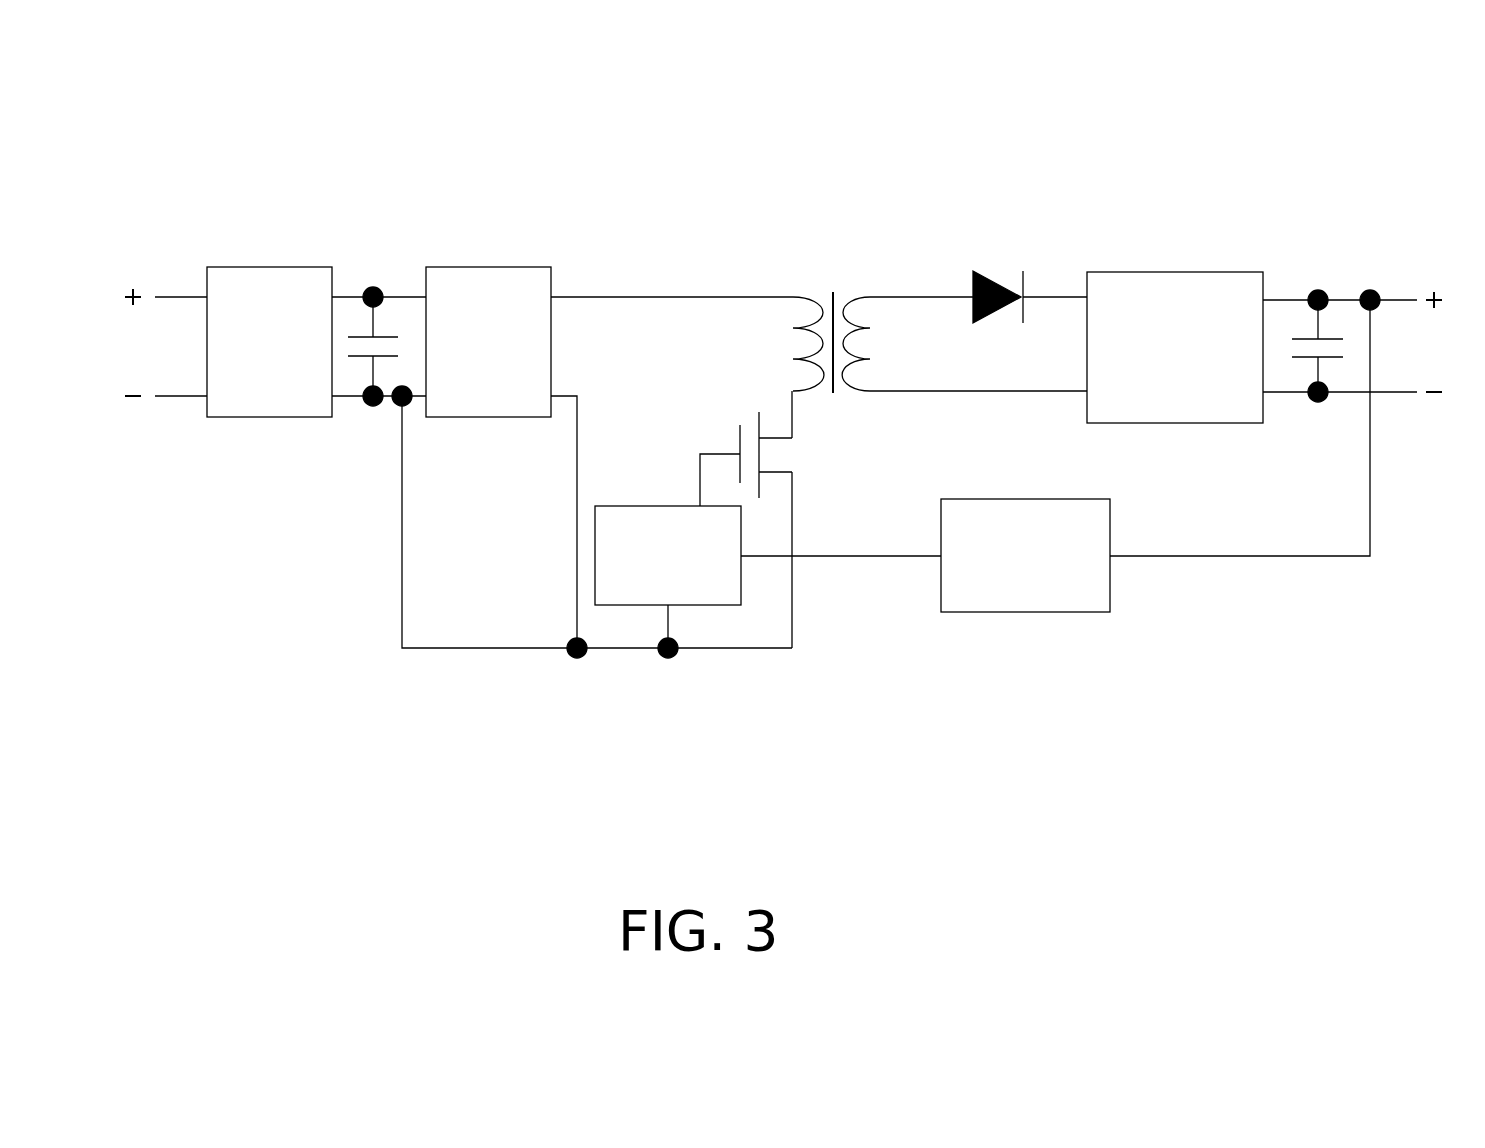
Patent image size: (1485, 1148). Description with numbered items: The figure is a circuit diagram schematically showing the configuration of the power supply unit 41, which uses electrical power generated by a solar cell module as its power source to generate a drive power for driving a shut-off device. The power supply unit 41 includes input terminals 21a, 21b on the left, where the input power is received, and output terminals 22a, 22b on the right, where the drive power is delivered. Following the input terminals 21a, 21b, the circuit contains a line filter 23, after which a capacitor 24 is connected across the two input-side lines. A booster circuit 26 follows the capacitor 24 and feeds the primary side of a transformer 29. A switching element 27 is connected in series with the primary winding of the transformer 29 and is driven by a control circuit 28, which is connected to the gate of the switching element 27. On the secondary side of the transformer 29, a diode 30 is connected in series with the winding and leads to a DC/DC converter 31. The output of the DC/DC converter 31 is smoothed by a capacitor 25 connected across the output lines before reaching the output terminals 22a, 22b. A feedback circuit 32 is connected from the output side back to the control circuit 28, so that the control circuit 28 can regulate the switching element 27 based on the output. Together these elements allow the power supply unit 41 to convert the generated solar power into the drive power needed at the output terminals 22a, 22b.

The input terminal 21a is at (177, 297).
The input terminal 21b is at (177, 396).
The output terminal 22a is at (1400, 300).
The output terminal 22b is at (1400, 393).
The line filter 23 is at (270, 267).
The capacitor 24 is at (390, 337).
The capacitor 25 is at (1333, 339).
The booster circuit 26 is at (507, 267).
The switching element 27 is at (759, 455).
The control circuit 28 is at (612, 506).
The transformer 29 is at (812, 297).
The diode 30 is at (978, 271).
The DC/DC converter 31 is at (1168, 272).
The feedback circuit 32 is at (1026, 612).
The power supply unit 41 is at (1276, 146).